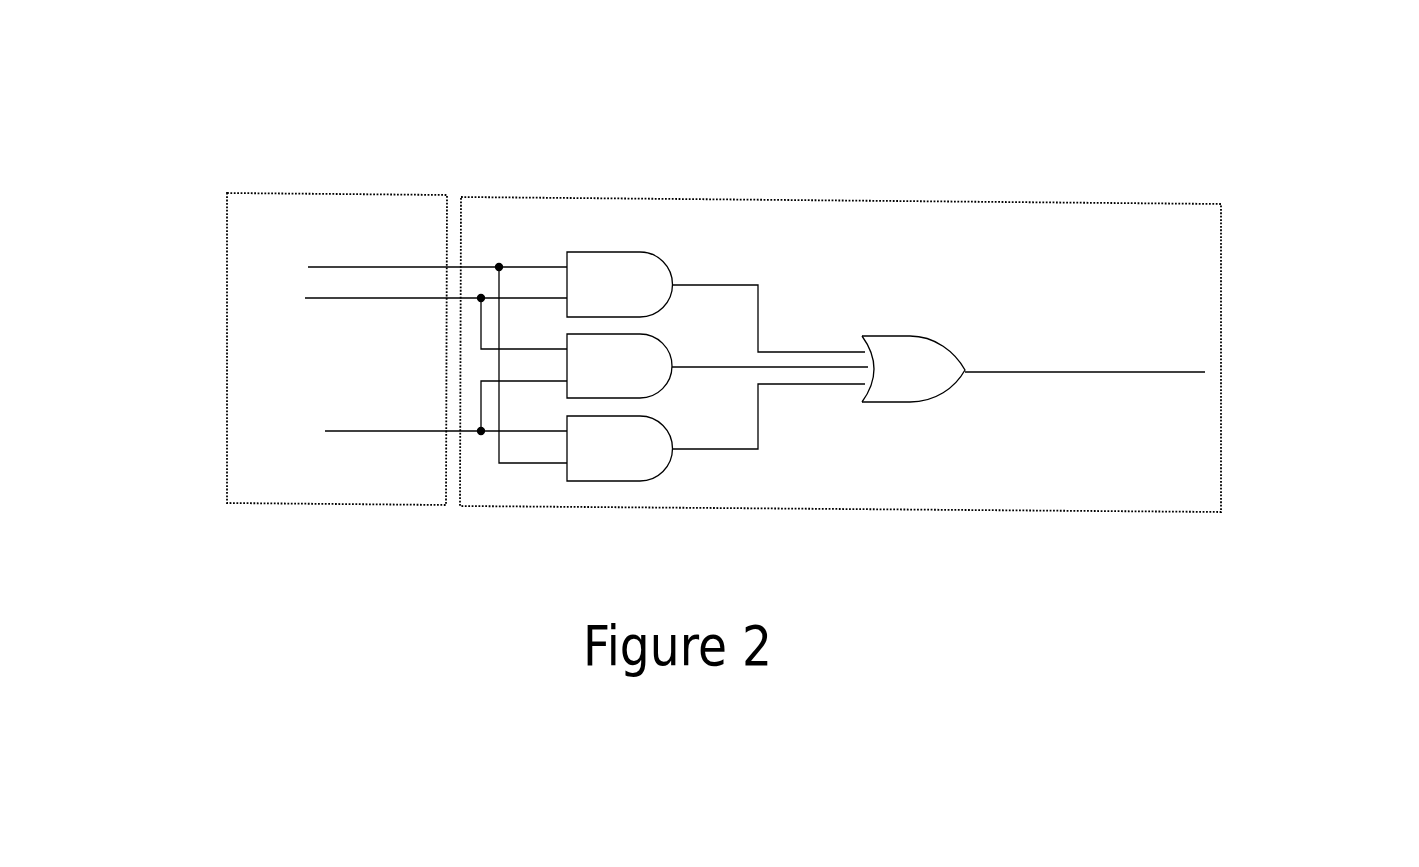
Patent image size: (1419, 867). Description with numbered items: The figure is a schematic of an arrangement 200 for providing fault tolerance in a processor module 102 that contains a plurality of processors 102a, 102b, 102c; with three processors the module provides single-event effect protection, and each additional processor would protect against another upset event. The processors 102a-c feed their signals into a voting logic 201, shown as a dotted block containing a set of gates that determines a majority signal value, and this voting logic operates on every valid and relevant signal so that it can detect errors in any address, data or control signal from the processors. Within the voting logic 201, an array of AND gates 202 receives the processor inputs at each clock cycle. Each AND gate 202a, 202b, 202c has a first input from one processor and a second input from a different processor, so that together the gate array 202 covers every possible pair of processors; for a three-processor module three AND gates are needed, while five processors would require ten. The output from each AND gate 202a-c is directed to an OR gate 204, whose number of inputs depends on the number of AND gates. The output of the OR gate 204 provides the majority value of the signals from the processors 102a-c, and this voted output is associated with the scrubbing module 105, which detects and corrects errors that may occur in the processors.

The processor module 102 is at (247, 193).
The processor 102a is at (300, 257).
The processor 102b is at (297, 285).
The processor 102c is at (320, 422).
The scrubbing module 105 is at (1222, 263).
The arrangement 200 is at (840, 325).
The voting logic 201 is at (975, 512).
The array of AND gates 202 is at (726, 323).
The AND gate 202a is at (667, 262).
The AND gate 202b is at (654, 338).
The AND gate 202c is at (672, 473).
The OR gate 204 is at (917, 333).